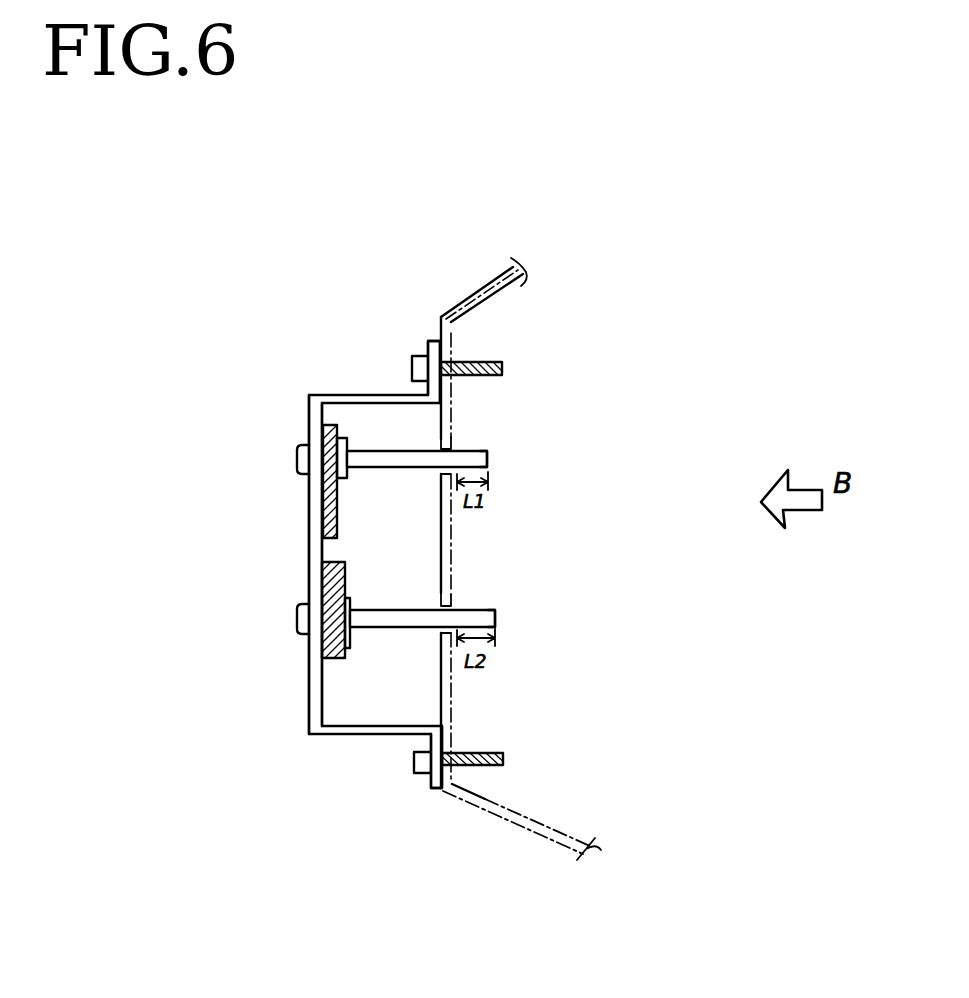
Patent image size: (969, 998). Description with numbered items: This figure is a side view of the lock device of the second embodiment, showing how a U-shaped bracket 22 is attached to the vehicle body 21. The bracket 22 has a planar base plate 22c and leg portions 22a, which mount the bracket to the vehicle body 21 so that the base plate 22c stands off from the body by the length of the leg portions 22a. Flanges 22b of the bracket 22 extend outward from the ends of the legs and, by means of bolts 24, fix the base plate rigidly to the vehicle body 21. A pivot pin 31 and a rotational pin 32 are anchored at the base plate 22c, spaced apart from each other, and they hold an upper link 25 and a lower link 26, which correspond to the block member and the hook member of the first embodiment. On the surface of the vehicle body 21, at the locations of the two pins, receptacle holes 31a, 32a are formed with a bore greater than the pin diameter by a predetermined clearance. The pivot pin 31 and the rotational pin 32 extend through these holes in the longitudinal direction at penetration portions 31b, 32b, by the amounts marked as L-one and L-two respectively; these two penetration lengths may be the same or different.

The vehicle body 21 is at (544, 830).
The bracket 22 is at (314, 687).
The leg portions 22a is at (366, 395).
The flanges 22b is at (428, 344).
The base plate 22c is at (318, 670).
The bolts 24 is at (473, 360).
The upper link 25 is at (328, 497).
The lower link 26 is at (330, 588).
The pivot pin 31 is at (488, 454).
The receptacle hole 31a is at (450, 442).
The penetration portion 31b is at (460, 452).
The rotational pin 32 is at (495, 617).
The receptacle hole 32a is at (452, 598).
The penetration portion 32b is at (466, 612).